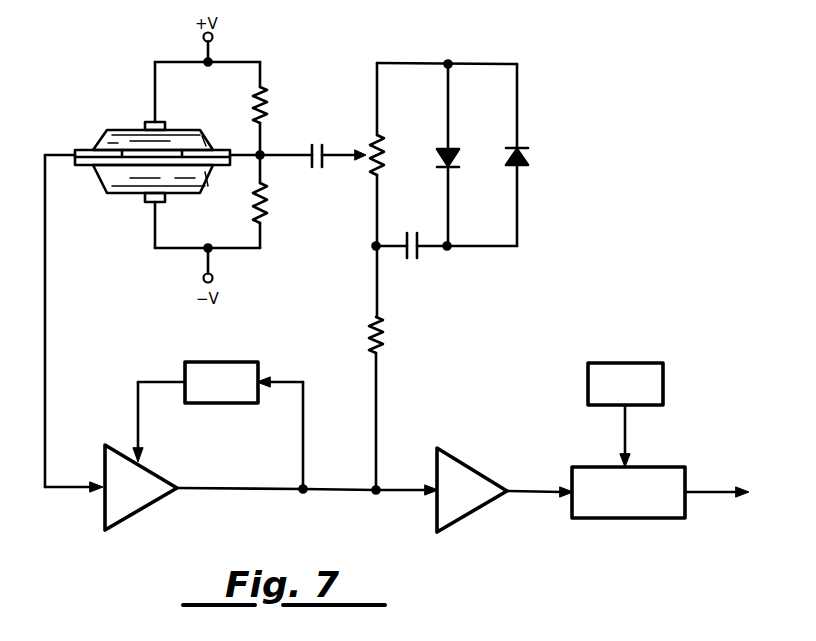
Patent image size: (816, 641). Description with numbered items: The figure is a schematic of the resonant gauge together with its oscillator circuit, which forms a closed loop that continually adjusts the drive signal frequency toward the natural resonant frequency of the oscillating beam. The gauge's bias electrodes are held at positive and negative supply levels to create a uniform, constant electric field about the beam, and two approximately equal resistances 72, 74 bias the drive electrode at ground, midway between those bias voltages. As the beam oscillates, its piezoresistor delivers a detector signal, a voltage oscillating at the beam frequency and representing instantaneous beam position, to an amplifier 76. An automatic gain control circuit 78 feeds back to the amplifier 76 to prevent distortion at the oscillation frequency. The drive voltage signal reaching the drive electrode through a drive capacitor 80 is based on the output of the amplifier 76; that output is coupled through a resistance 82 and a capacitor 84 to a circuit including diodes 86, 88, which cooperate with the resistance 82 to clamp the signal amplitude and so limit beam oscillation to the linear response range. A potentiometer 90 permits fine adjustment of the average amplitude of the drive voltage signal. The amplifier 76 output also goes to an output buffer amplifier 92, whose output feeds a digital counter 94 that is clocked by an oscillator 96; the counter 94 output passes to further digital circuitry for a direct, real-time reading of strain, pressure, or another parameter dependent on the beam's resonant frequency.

The resistance 72 is at (270, 106).
The resistance 74 is at (268, 203).
The amplifier 76 is at (155, 503).
The automatic gain control circuit 78 is at (225, 362).
The drive capacitor 80 is at (315, 145).
The resistance 82 is at (380, 345).
The capacitor 84 is at (412, 258).
The diode 86 is at (455, 157).
The diode 88 is at (525, 158).
The potentiometer 90 is at (380, 165).
The output buffer amplifier 92 is at (488, 505).
The digital counter 94 is at (663, 467).
The oscillator 96 is at (620, 363).